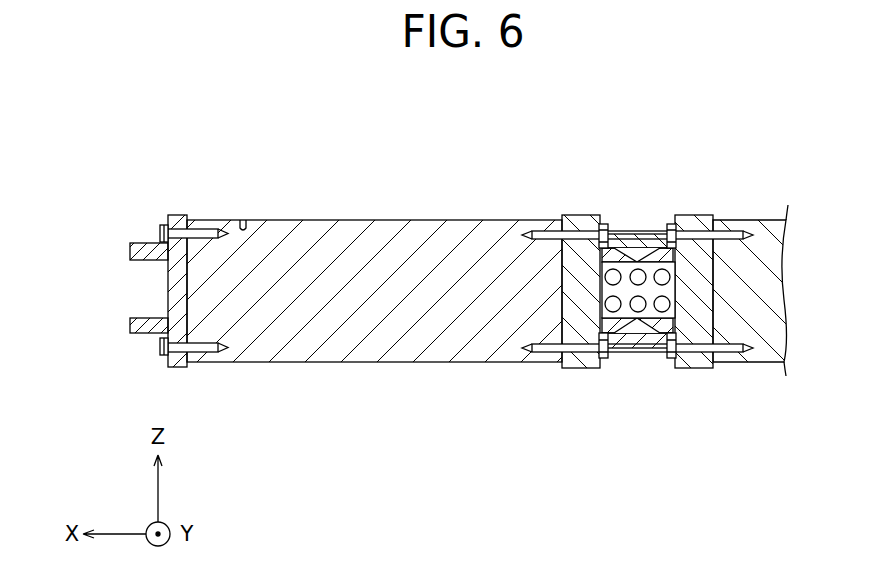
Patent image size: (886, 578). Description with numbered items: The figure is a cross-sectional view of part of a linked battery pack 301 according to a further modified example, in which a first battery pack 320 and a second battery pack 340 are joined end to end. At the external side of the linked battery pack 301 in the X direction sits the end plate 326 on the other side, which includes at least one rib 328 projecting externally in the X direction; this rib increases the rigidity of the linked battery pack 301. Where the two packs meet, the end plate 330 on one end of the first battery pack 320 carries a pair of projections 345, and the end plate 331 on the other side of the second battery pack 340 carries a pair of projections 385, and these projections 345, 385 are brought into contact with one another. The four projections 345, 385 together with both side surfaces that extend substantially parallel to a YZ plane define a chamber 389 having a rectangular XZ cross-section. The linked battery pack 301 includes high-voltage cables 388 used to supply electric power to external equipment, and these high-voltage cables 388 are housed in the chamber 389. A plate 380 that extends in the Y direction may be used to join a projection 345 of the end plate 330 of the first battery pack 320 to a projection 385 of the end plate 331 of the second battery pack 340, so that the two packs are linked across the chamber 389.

The linked battery pack 301 is at (442, 163).
The first battery pack 320 is at (752, 208).
The end plate on the other side 326 is at (178, 215).
The rib 328 is at (131, 244).
The end plate on one side of first battery pack 330 is at (690, 215).
The end plate on the other side of second battery pack 331 is at (578, 215).
The second battery pack 340 is at (358, 212).
The projection of end plate 330 345 is at (652, 325).
The plate 380 is at (636, 231).
The projection of end plate 331 385 is at (623, 332).
The high-voltage cable 388 is at (682, 332).
The chamber 389 is at (604, 325).